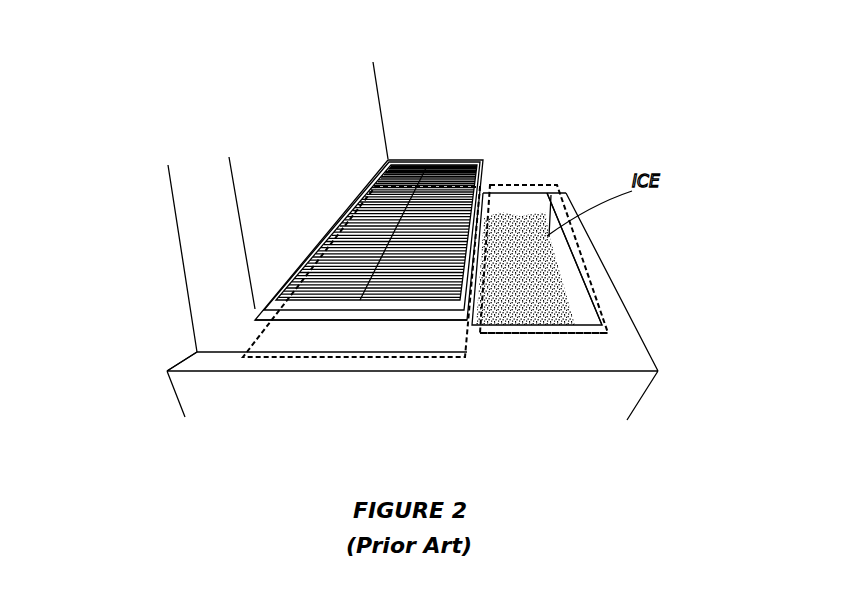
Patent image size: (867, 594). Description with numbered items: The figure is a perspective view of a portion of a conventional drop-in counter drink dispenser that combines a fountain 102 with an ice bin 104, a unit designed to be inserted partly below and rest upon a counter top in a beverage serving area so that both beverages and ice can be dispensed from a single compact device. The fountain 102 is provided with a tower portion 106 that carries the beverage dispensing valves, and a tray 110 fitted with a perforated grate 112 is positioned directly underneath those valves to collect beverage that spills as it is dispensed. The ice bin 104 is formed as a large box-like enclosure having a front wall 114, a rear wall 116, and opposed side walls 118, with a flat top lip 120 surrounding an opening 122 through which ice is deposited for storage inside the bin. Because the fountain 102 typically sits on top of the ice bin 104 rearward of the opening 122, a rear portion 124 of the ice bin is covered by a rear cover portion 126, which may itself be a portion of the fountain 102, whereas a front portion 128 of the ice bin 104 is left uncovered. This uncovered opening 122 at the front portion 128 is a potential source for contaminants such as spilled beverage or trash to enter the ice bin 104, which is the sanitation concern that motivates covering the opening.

The fountain 102 is at (160, 192).
The ice bin 104 is at (584, 200).
The tower portion 106 is at (357, 87).
The tray 110 is at (458, 150).
The perforated grate 112 is at (395, 158).
The front wall 114 is at (633, 320).
The rear wall 116 is at (178, 357).
The side walls 118 is at (532, 188).
The flat top lip 120 is at (625, 347).
The opening 122 is at (573, 277).
The rear portion 124 is at (293, 358).
The rear cover portion 126 is at (352, 340).
The front portion 128 is at (540, 337).